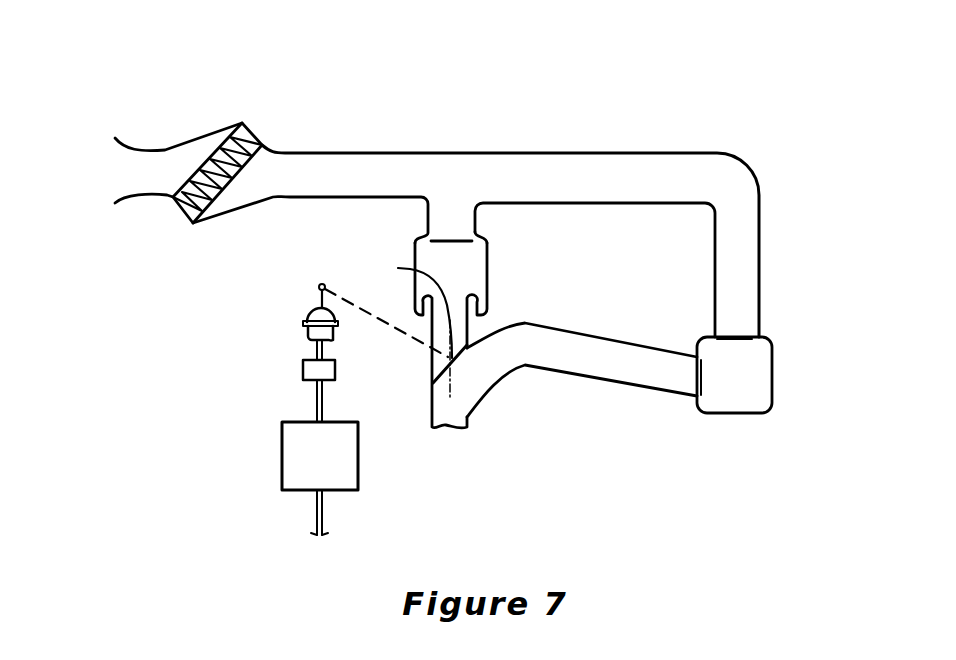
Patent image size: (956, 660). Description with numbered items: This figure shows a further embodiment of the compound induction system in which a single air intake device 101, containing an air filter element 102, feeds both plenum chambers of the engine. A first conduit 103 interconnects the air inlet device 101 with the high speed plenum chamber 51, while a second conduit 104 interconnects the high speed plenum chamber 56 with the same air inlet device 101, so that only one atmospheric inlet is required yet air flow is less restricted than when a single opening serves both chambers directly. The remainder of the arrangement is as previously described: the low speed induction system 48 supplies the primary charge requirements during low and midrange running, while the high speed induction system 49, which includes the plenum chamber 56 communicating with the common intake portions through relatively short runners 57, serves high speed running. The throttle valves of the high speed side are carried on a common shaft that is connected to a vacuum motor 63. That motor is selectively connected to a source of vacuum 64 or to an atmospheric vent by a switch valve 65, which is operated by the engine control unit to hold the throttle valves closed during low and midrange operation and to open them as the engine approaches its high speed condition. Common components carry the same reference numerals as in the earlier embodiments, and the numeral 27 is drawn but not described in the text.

The valve member 27 is at (405, 325).
The low speed induction system 48 is at (514, 260).
The high speed induction system 49 is at (426, 206).
The high speed plenum chamber 51 is at (637, 385).
The second plenum chamber 56 is at (490, 250).
The short runners 57 is at (430, 347).
The vacuum motor 63 is at (305, 323).
The source of vacuum 64 is at (282, 463).
The switch valve 65 is at (303, 372).
The air intake device 101 is at (177, 224).
The air filter element 102 is at (252, 130).
The first conduit 103 is at (600, 152).
The second conduit 104 is at (478, 223).